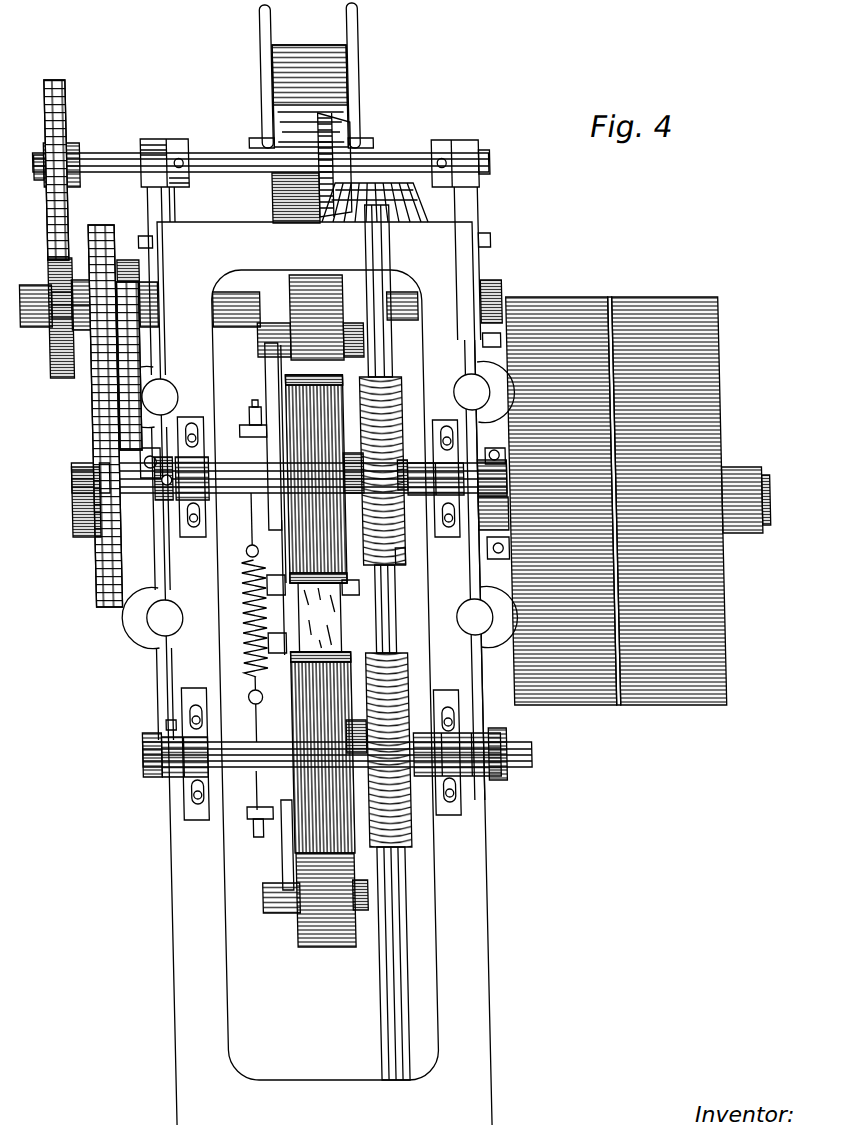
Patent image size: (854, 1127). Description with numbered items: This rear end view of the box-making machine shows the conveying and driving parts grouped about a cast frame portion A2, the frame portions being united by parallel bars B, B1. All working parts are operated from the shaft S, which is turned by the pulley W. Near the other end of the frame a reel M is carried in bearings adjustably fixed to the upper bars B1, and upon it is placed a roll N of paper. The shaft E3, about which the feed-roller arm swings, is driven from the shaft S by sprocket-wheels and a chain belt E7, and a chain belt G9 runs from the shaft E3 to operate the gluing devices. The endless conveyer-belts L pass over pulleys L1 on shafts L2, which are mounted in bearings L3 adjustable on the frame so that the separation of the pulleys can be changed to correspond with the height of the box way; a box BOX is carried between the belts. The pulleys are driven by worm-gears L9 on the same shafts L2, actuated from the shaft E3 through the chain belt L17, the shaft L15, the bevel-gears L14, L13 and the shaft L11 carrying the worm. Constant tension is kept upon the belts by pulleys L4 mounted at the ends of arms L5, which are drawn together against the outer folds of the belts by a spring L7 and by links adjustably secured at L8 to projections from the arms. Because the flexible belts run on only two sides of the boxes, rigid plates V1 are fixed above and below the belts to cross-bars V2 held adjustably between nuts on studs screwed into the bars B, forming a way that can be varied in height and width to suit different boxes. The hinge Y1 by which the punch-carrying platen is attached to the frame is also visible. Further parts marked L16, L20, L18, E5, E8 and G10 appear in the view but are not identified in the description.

The frame portion A2 is at (324, 673).
The shaft L15 is at (222, 158).
The bracket L16 is at (158, 203).
The roll of paper N is at (322, 108).
The reel M is at (262, 182).
The bevel-gear L14 is at (352, 143).
The bevel-gear L13 is at (384, 192).
The worm-gear L9 is at (378, 400).
The shaft L11 is at (371, 988).
The pulley L4 is at (331, 332).
The belt L is at (323, 445).
The box BOX is at (320, 617).
The rigid plate V1 is at (341, 634).
The cross-bar V2 is at (400, 565).
The arm L5 is at (268, 378).
The link securing point L8 is at (242, 447).
The shaft L2 is at (221, 477).
The platen hinge Y1 is at (133, 740).
The bearing L3 is at (193, 540).
The spring L7 is at (236, 621).
The pulley L1 is at (252, 698).
The pulley W is at (555, 302).
The shaft S is at (766, 495).
The shaft E3 is at (500, 297).
The bar B1 is at (319, 570).
The bar B is at (320, 638).
The sprocket hub L20 is at (82, 147).
The chain belt L17 is at (70, 192).
The gear E5 is at (50, 278).
The shaft L18 is at (46, 330).
The chain belt E7 is at (88, 413).
The chain belt G9 is at (134, 268).
The sprocket G10 is at (150, 283).
The gear E8 is at (85, 540).